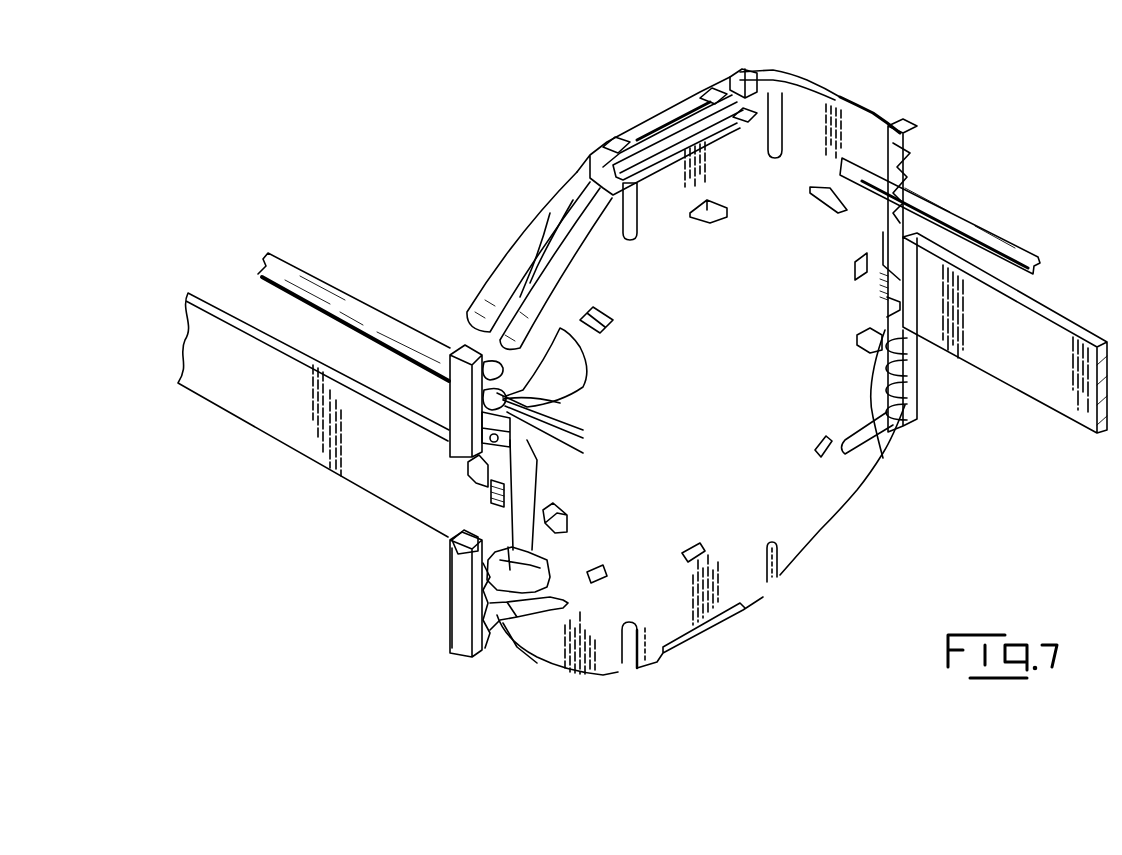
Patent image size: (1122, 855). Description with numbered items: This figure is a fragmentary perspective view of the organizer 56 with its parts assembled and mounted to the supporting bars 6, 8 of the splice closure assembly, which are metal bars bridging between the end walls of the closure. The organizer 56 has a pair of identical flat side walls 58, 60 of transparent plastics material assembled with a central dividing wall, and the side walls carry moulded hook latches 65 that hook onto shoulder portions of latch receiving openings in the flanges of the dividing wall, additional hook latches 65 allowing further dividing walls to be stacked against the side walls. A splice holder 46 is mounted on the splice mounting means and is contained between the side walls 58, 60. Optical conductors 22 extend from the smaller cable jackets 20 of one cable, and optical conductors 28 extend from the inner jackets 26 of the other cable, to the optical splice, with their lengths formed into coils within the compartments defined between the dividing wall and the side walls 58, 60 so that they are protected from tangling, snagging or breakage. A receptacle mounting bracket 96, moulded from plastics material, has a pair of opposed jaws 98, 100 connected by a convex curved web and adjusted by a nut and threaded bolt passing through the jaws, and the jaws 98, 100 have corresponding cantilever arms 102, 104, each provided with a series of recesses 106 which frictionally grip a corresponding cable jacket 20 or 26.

The supporting bar 6 is at (268, 430).
The supporting bar 8 is at (1050, 328).
The cable jacket 20 is at (335, 293).
The optical conductor 22 is at (550, 225).
The inner jacket 26 is at (968, 223).
The optical conductor 28 is at (870, 167).
The splice holder 46 is at (660, 130).
The organizer 56 is at (694, 356).
The side wall 58 is at (507, 255).
The side wall 60 is at (857, 490).
The hook latch 65 is at (762, 212).
The receptacle mounting bracket 96 is at (454, 348).
The jaw 98 is at (468, 480).
The jaw 100 is at (460, 535).
The cantilever arm 102 is at (450, 395).
The cantilever arm 104 is at (453, 610).
The recess 106 is at (495, 633).